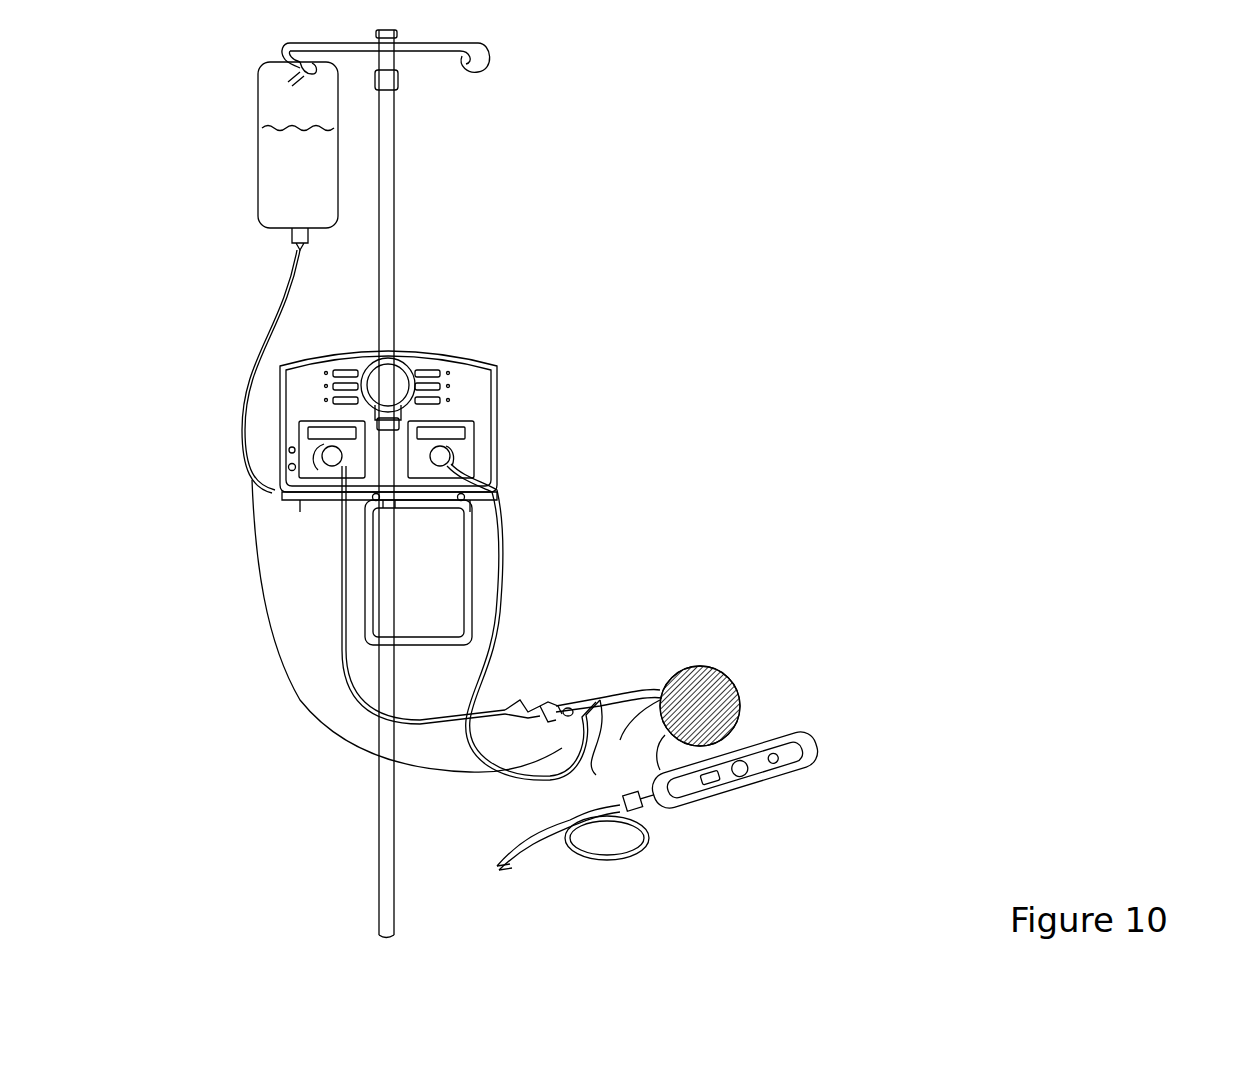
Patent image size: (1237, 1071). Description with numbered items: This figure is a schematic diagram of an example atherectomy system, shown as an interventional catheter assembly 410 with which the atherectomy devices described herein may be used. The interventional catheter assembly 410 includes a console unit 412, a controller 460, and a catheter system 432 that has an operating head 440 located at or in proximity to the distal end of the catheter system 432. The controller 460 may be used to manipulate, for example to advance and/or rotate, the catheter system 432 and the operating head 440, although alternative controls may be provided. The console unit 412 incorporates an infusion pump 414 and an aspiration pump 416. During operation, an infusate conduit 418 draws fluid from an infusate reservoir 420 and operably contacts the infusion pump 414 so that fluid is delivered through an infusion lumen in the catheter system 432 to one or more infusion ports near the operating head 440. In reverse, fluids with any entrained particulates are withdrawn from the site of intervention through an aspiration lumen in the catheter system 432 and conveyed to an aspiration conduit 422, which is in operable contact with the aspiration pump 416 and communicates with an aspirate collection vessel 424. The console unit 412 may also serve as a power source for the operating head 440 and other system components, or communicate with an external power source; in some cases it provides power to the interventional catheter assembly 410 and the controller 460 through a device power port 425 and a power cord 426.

The interventional catheter assembly 410 is at (660, 162).
The console unit 412 is at (487, 348).
The infusion pump 414 is at (313, 448).
The aspiration pump 416 is at (463, 449).
The infusate conduit 418 is at (340, 590).
The infusate reservoir 420 is at (320, 189).
The aspiration conduit 422 is at (497, 612).
The aspirate collection vessel 424 is at (443, 591).
The device power port 425 is at (286, 466).
The power cord 426 is at (322, 710).
The catheter system 432 is at (638, 852).
The operating head 440 is at (492, 852).
The controller 460 is at (748, 786).